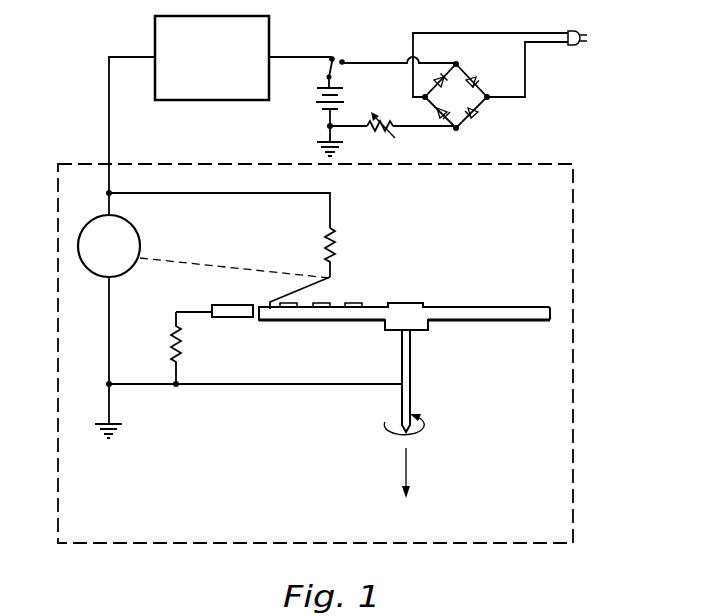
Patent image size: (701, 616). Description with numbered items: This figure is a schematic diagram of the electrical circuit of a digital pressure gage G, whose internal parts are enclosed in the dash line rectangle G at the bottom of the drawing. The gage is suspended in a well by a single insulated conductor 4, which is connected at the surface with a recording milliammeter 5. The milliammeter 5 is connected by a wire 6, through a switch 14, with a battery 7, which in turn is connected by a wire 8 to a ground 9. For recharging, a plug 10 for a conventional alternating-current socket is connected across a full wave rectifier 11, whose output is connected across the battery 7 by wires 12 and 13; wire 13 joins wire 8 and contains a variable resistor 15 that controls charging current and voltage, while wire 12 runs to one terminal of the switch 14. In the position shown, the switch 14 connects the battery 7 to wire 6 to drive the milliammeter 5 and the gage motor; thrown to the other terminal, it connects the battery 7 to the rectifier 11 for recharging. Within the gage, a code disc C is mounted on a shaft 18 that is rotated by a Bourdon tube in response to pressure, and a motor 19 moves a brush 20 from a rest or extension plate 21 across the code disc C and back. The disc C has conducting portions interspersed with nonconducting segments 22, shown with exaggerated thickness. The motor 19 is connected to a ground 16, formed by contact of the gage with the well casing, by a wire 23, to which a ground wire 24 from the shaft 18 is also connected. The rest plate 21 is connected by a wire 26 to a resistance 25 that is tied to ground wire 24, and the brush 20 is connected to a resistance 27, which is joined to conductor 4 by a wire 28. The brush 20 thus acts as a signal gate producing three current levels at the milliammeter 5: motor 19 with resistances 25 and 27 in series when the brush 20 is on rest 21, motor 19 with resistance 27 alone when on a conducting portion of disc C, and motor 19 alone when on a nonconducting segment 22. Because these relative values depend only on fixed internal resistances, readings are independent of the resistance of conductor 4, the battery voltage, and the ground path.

The insulated conductor 4 is at (108, 113).
The recording milliammeter 5 is at (155, 33).
The wire 6 is at (292, 57).
The battery 7 is at (319, 87).
The wire 8 is at (325, 113).
The ground 9 is at (318, 143).
The plug 10 is at (568, 30).
The full wave rectifier 11 is at (460, 106).
The wire 12 is at (383, 62).
The wire 13 is at (436, 133).
The switch 14 is at (338, 66).
The variable resistor 15 is at (384, 134).
The ground 16 is at (120, 423).
The shaft 18 is at (412, 400).
The motor 19 is at (141, 241).
The brush 20 is at (288, 300).
The rest or extension plate 21 is at (235, 318).
The nonconducting segments 22 is at (358, 303).
The wire 23 is at (111, 313).
The ground wire 24 is at (323, 385).
The resistance 25 is at (170, 340).
The wire 26 is at (193, 311).
The resistance 27 is at (338, 246).
The wire 28 is at (203, 193).
The code disc C is at (514, 332).
The digital pressure gage G is at (212, 550).